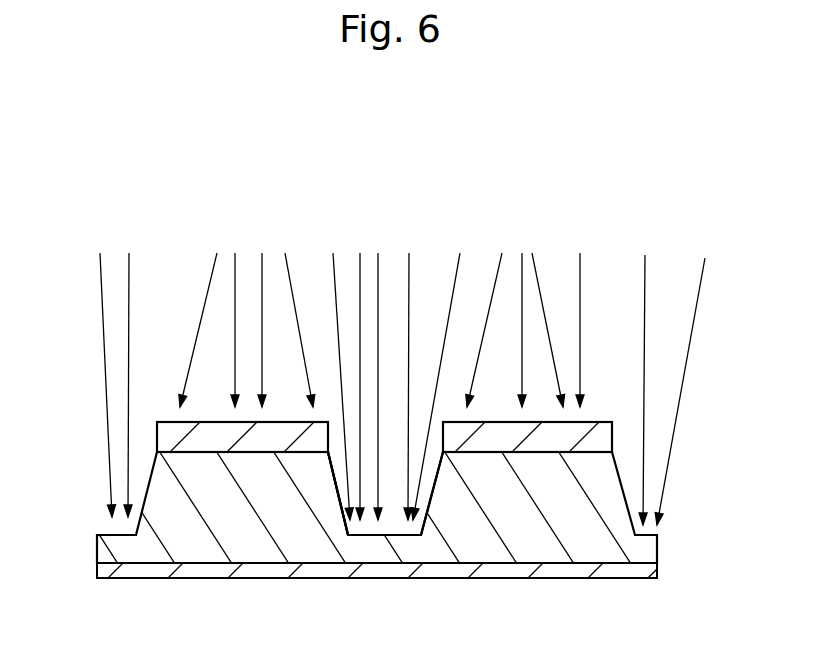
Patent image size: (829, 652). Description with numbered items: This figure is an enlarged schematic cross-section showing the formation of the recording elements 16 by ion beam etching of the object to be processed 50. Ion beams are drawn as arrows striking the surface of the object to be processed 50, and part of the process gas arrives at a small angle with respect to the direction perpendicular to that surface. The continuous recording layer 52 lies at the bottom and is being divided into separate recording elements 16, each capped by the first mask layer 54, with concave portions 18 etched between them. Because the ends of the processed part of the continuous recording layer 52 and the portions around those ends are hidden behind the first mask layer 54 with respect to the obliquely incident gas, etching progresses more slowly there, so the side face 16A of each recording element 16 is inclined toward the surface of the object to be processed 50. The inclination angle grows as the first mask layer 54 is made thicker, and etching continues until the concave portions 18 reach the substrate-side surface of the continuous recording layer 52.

The object to be processed 50 is at (406, 205).
The concave portions 18 is at (388, 460).
The recording elements 16 is at (233, 462).
The side face 16A is at (340, 497).
The first mask layer 54 is at (597, 423).
The continuous recording layer 52 is at (657, 556).